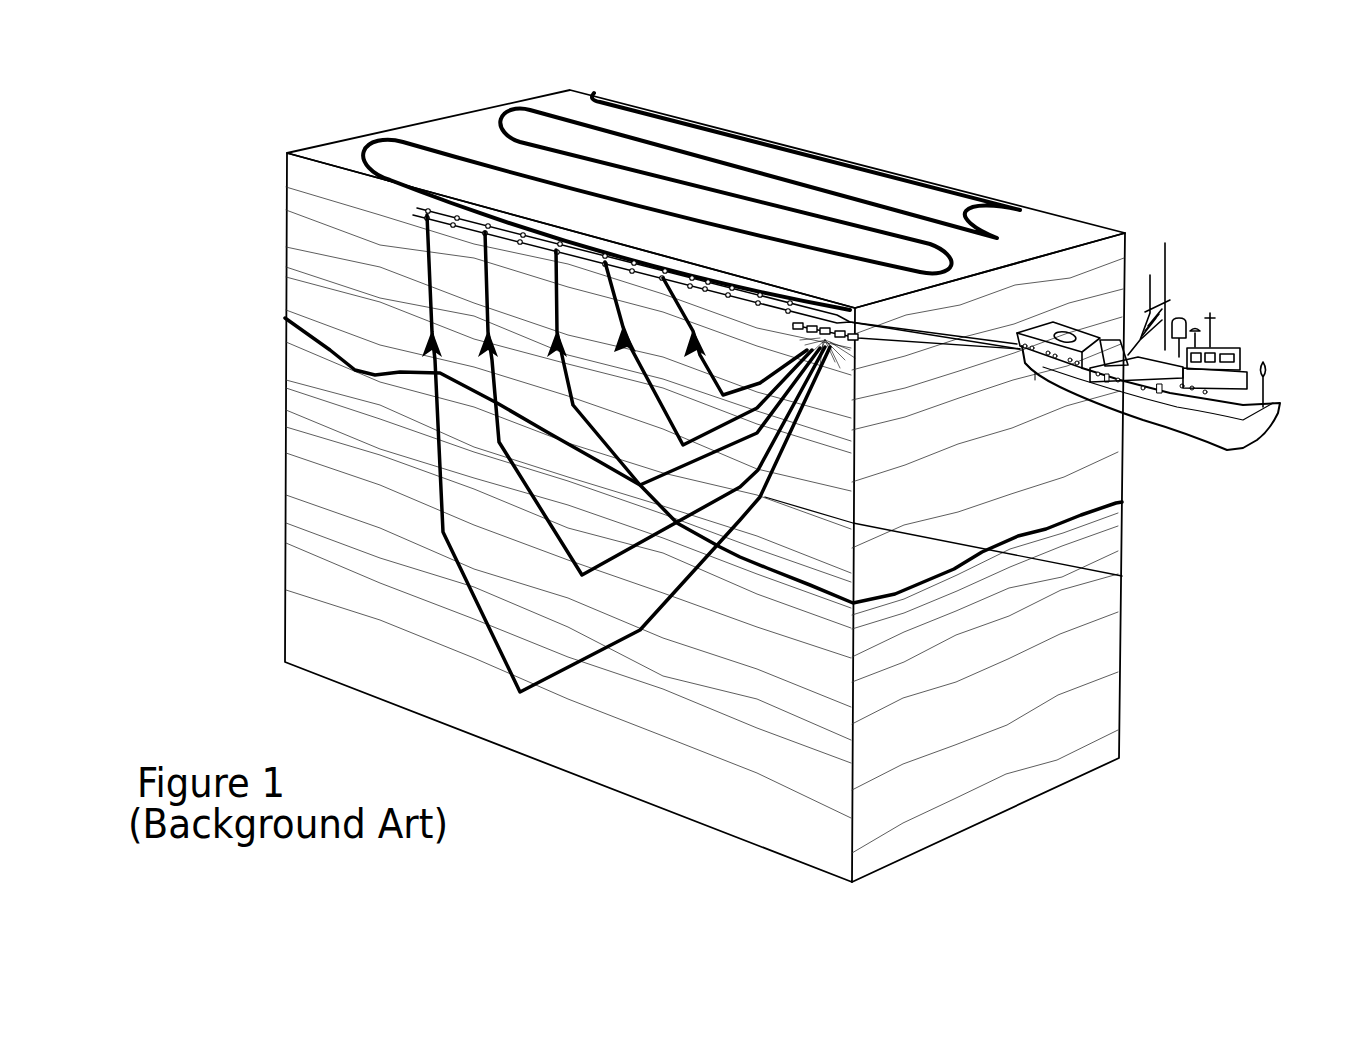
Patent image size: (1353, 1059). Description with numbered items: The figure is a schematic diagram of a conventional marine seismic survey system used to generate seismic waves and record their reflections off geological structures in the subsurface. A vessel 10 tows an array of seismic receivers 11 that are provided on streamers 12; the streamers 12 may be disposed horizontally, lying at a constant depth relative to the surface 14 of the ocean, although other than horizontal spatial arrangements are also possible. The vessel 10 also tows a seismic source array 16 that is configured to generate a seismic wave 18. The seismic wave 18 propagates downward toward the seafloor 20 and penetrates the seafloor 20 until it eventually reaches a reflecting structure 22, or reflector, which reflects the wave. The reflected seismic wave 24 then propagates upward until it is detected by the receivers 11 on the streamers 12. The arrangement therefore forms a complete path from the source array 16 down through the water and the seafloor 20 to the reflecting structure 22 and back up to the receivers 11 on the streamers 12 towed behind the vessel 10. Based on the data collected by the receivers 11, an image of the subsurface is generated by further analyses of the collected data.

The vessel 10 is at (1250, 334).
The seismic receivers 11 is at (485, 232).
The streamers 12 is at (628, 242).
The surface of the ocean 14 is at (463, 130).
The seismic source array 16 is at (838, 320).
The seismic wave 18 is at (1122, 576).
The seafloor 20 is at (1081, 503).
The reflecting structure 22 is at (388, 500).
The reflected seismic wave 24 is at (432, 420).